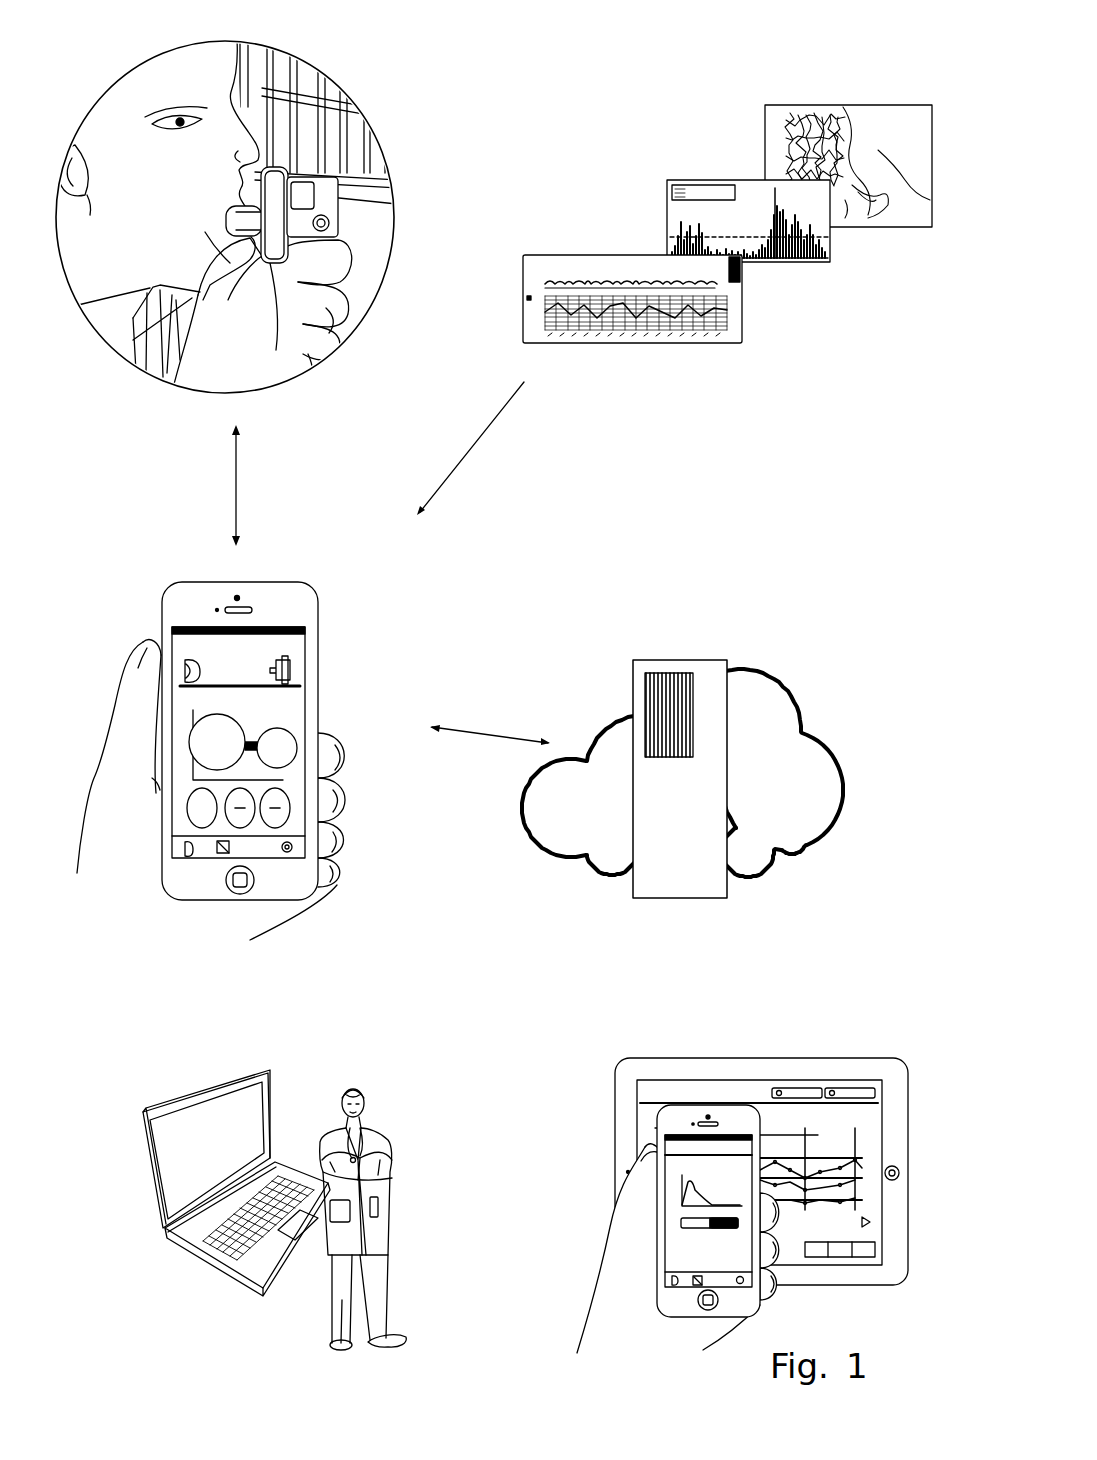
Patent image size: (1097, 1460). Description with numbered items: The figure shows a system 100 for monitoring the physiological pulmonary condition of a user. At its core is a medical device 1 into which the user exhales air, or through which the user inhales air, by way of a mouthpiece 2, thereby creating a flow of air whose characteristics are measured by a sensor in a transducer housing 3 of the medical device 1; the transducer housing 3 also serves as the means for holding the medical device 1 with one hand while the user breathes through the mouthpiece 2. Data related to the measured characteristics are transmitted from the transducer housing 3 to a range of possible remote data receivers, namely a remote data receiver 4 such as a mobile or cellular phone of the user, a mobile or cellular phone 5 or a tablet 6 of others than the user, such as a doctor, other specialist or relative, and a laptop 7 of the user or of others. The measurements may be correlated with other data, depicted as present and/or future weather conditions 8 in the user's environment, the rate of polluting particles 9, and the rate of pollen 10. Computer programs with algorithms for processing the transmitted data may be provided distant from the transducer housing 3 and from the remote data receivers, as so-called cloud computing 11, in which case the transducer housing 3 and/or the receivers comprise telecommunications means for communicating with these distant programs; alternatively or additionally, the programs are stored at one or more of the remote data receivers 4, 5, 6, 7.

The medical device 1 is at (232, 330).
The mouthpiece 2 is at (248, 224).
The transducer housing 3 is at (266, 220).
The remote data receiver 4 is at (284, 680).
The mobile or cellular phone 5 is at (707, 1158).
The tablet 6 is at (837, 1158).
The laptop 7 is at (271, 1142).
The weather conditions 8 is at (660, 296).
The rate of polluting particles 9 is at (790, 260).
The rate of pollen 10 is at (862, 192).
The cloud computing 11 is at (793, 803).
The system 100 is at (900, 86).